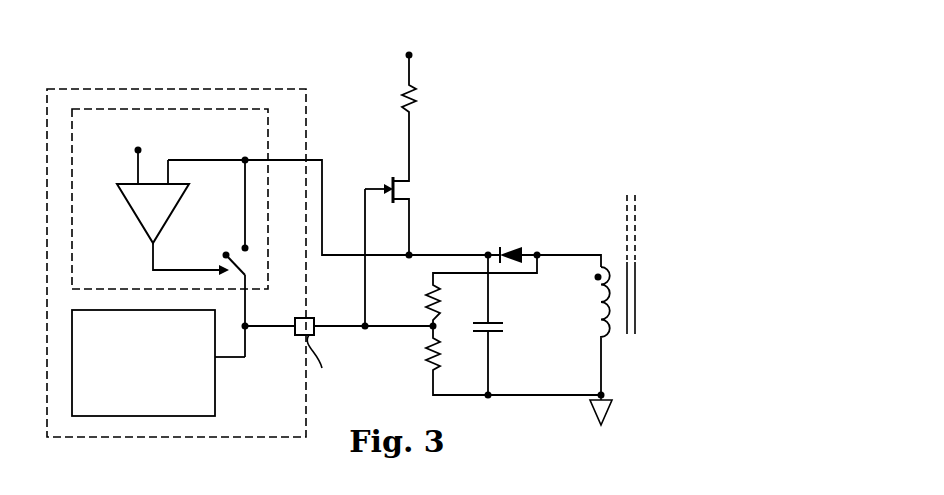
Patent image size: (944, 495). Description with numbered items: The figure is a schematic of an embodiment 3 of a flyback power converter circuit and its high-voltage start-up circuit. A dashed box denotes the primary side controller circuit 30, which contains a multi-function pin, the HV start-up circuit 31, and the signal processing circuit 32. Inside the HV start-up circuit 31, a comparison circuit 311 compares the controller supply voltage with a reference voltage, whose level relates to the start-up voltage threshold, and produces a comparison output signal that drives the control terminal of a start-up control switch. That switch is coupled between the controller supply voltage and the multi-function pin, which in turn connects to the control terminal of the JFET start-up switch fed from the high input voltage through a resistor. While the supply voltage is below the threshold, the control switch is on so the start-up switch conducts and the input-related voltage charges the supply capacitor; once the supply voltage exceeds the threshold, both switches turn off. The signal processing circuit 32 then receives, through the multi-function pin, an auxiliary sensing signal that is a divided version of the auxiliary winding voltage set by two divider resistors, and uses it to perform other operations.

The flyback power converter circuit and HV start-up circuit embodiment 3 is at (257, 62).
The primary side controller circuit 30 is at (270, 391).
The HV start-up circuit 31 is at (92, 281).
The comparison circuit 311 is at (153, 213).
The signal processing circuit 32 is at (184, 409).